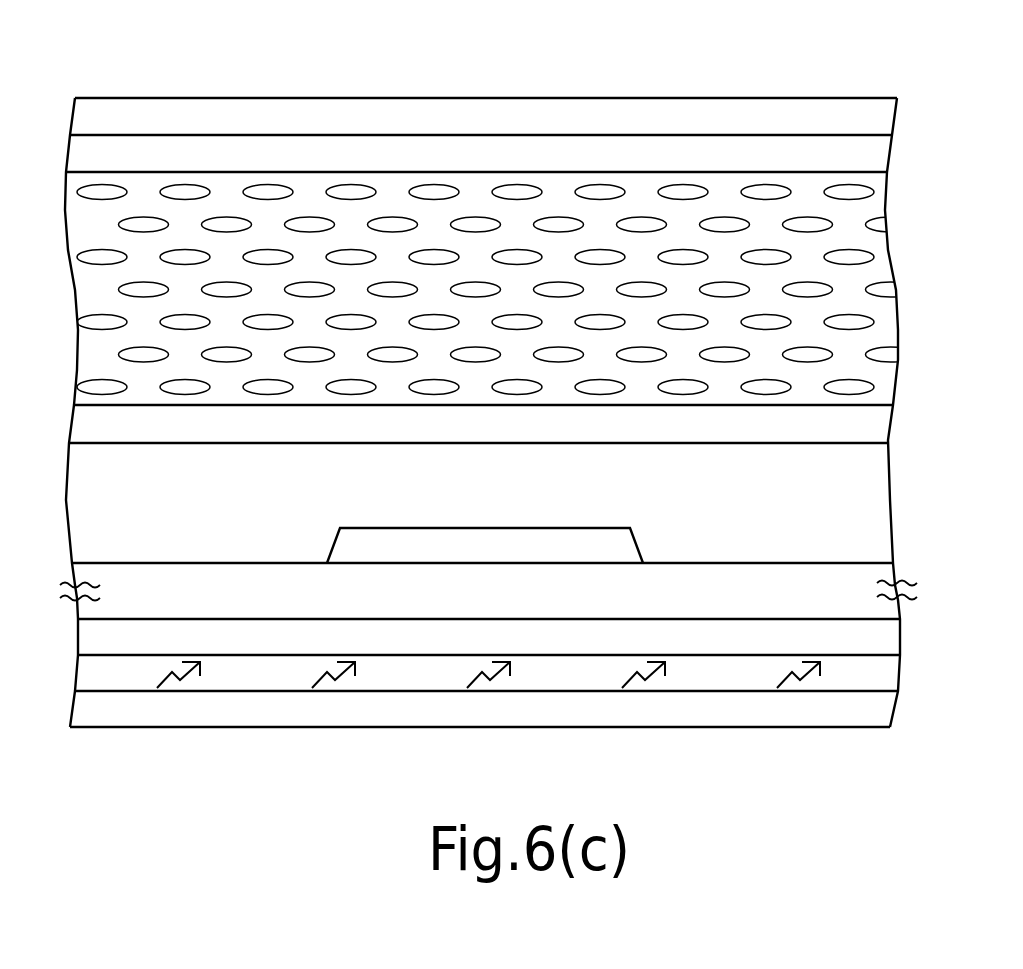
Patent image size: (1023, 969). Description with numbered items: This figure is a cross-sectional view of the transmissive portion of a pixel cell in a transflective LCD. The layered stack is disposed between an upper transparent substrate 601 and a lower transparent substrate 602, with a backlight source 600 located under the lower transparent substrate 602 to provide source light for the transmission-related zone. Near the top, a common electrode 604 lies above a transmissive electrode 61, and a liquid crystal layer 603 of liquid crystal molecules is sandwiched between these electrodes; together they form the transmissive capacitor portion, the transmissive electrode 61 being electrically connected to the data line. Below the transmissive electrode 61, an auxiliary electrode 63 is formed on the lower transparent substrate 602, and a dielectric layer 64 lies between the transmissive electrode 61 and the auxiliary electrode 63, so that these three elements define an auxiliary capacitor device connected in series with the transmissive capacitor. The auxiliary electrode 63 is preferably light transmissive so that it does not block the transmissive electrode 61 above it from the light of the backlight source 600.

The backlight source 600 is at (873, 708).
The upper transparent substrate 601 is at (687, 108).
The lower transparent substrate 602 is at (888, 645).
The liquid crystal layer 603 is at (877, 273).
The common electrode 604 is at (800, 158).
The transmissive electrode 61 is at (871, 421).
The auxiliary electrode 63 is at (590, 543).
The dielectric layer 64 is at (874, 501).